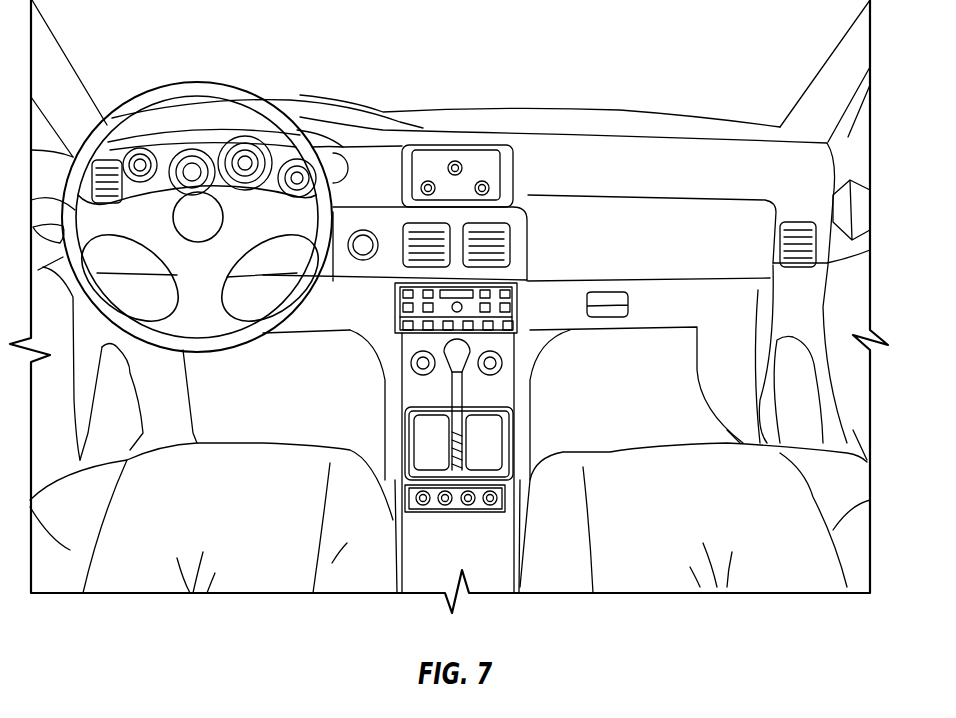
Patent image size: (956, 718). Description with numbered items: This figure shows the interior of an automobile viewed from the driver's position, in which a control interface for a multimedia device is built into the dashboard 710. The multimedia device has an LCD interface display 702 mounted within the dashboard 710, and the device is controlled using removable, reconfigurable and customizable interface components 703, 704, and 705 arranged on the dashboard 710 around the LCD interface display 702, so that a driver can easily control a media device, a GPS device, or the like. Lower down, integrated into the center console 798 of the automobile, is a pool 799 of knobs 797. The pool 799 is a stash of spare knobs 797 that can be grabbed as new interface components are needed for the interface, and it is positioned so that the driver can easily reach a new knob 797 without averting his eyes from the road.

The LCD interface display 702 is at (455, 161).
The interface component 703 is at (427, 181).
The interface component 704 is at (464, 168).
The interface component 705 is at (491, 188).
The dashboard 710 is at (470, 144).
The knob 797 is at (423, 507).
The center console 798 is at (520, 450).
The pool of knobs 799 is at (405, 497).